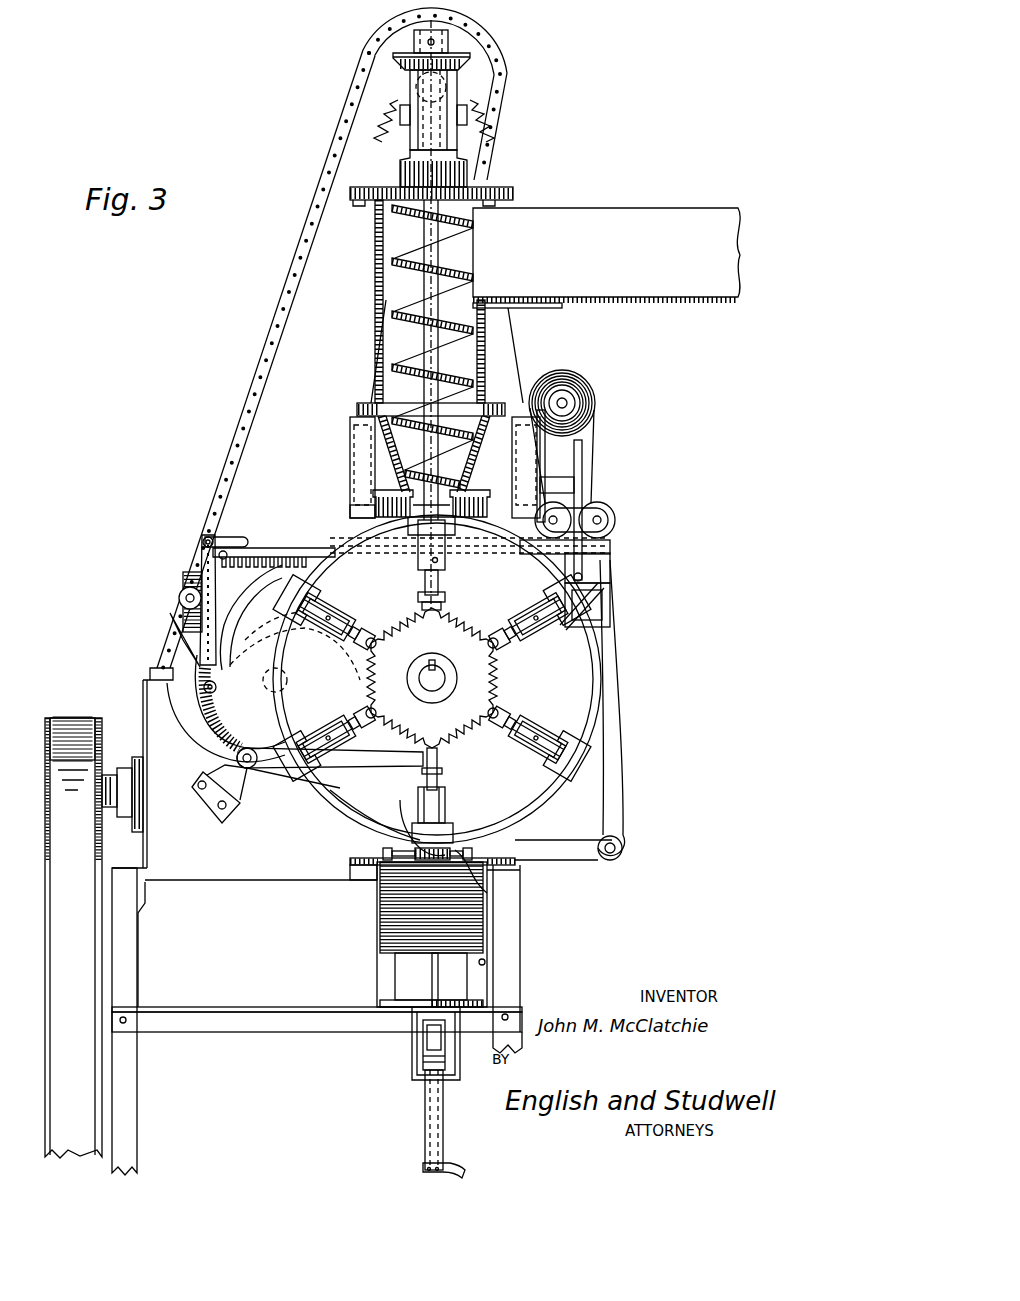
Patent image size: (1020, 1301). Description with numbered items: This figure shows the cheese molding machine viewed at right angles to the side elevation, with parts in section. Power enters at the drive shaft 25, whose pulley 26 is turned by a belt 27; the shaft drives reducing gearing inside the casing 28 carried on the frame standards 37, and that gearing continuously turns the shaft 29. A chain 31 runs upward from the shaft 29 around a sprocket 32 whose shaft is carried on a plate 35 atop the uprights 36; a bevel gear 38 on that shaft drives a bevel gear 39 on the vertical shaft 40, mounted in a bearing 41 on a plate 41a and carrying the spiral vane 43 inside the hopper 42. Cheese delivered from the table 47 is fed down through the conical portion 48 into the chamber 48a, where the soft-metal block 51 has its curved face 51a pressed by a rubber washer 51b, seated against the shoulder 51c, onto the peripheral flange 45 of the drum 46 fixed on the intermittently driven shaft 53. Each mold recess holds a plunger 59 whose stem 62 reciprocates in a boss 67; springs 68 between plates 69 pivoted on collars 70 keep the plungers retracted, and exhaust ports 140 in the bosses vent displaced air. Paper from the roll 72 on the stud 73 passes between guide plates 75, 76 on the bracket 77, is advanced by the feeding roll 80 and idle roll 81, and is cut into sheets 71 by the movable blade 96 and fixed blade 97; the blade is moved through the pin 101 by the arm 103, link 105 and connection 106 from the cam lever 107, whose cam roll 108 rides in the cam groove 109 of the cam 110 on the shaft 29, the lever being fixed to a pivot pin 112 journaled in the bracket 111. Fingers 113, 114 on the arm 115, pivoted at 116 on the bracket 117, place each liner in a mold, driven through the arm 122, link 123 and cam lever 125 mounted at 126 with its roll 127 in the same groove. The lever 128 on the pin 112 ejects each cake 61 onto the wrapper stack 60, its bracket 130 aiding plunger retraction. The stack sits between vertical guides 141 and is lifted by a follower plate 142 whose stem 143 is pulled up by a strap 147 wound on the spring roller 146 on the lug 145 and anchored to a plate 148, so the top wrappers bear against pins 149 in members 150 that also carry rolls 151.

The drive shaft 25 is at (112, 775).
The pulley 26 is at (47, 760).
The belt 27 is at (76, 718).
The casing 28 is at (143, 680).
The shaft 29 is at (262, 683).
The chain 31 is at (310, 222).
The sprocket 32 is at (386, 130).
The plate 35 is at (467, 118).
The uprights 36 is at (467, 175).
The frame standards 37 is at (130, 962).
The bevel gear 38 is at (416, 88).
The bevel gear 39 is at (470, 56).
The vertical shaft 40 is at (452, 250).
The bearing 41 is at (457, 88).
The plate 41a is at (513, 192).
The hopper 42 is at (375, 240).
The spiral vane 43 is at (392, 268).
The peripheral flange 45 is at (340, 805).
The drum 46 is at (312, 798).
The table or support 47 is at (572, 297).
The conical portion 48 is at (360, 440).
The chamber 48a is at (360, 504).
The member or block 51 is at (445, 548).
The lower curved face 51a is at (393, 520).
The rubber washer 51b is at (468, 500).
The shoulder 51c is at (460, 492).
The shaft 53 is at (445, 674).
The plunger 59 is at (432, 833).
The wrapper stack 60 is at (483, 921).
The cake of cheese 61 is at (418, 812).
The stem 62 is at (352, 715).
The boss 67 is at (318, 632).
The springs 68 is at (412, 617).
The plates 69 is at (488, 641).
The collars 70 is at (376, 628).
The paper sheets or liners 71 is at (498, 848).
The roll of paper 72 is at (595, 406).
The stud 73 is at (567, 401).
The guide plate 75 is at (594, 490).
The guide plate 76 is at (574, 484).
The bracket 77 is at (582, 470).
The feeding roll 80 is at (571, 515).
The idle roll 81 is at (615, 521).
The blade 96 is at (606, 572).
The blade 97 is at (560, 590).
The pin 101 is at (612, 606).
The arm 103 is at (612, 536).
The link 105 is at (247, 537).
The connection 106 is at (203, 538).
The cam lever 107 is at (200, 548).
The cam roll 108 is at (217, 686).
The cam groove 109 is at (205, 722).
The cam 110 is at (168, 692).
The bracket 111 is at (195, 784).
The pivot pin 112 is at (249, 770).
The member or finger 113 is at (610, 585).
The member or finger 114 is at (602, 602).
The oscillatory arm 115 is at (614, 662).
The pivot 116 is at (622, 848).
The bracket 117 is at (571, 840).
The arm 122 is at (610, 548).
The link 123 is at (258, 556).
The cam lever 125 is at (185, 580).
The mounting pivot 126 is at (179, 599).
The roll 127 is at (230, 645).
The lever 128 is at (360, 768).
The bracket 130 is at (446, 757).
The exhaust ports 140 is at (515, 605).
The vertical guides 141 is at (395, 983).
The follower plate 142 is at (486, 960).
The stem 143 is at (432, 968).
The lug 145 is at (417, 1045).
The roller 146 is at (445, 1063).
The strap 147 is at (425, 1100).
The plate 148 is at (458, 1168).
The pins 149 is at (405, 825).
The supporting members 150 is at (350, 870).
The rolls 151 is at (383, 851).